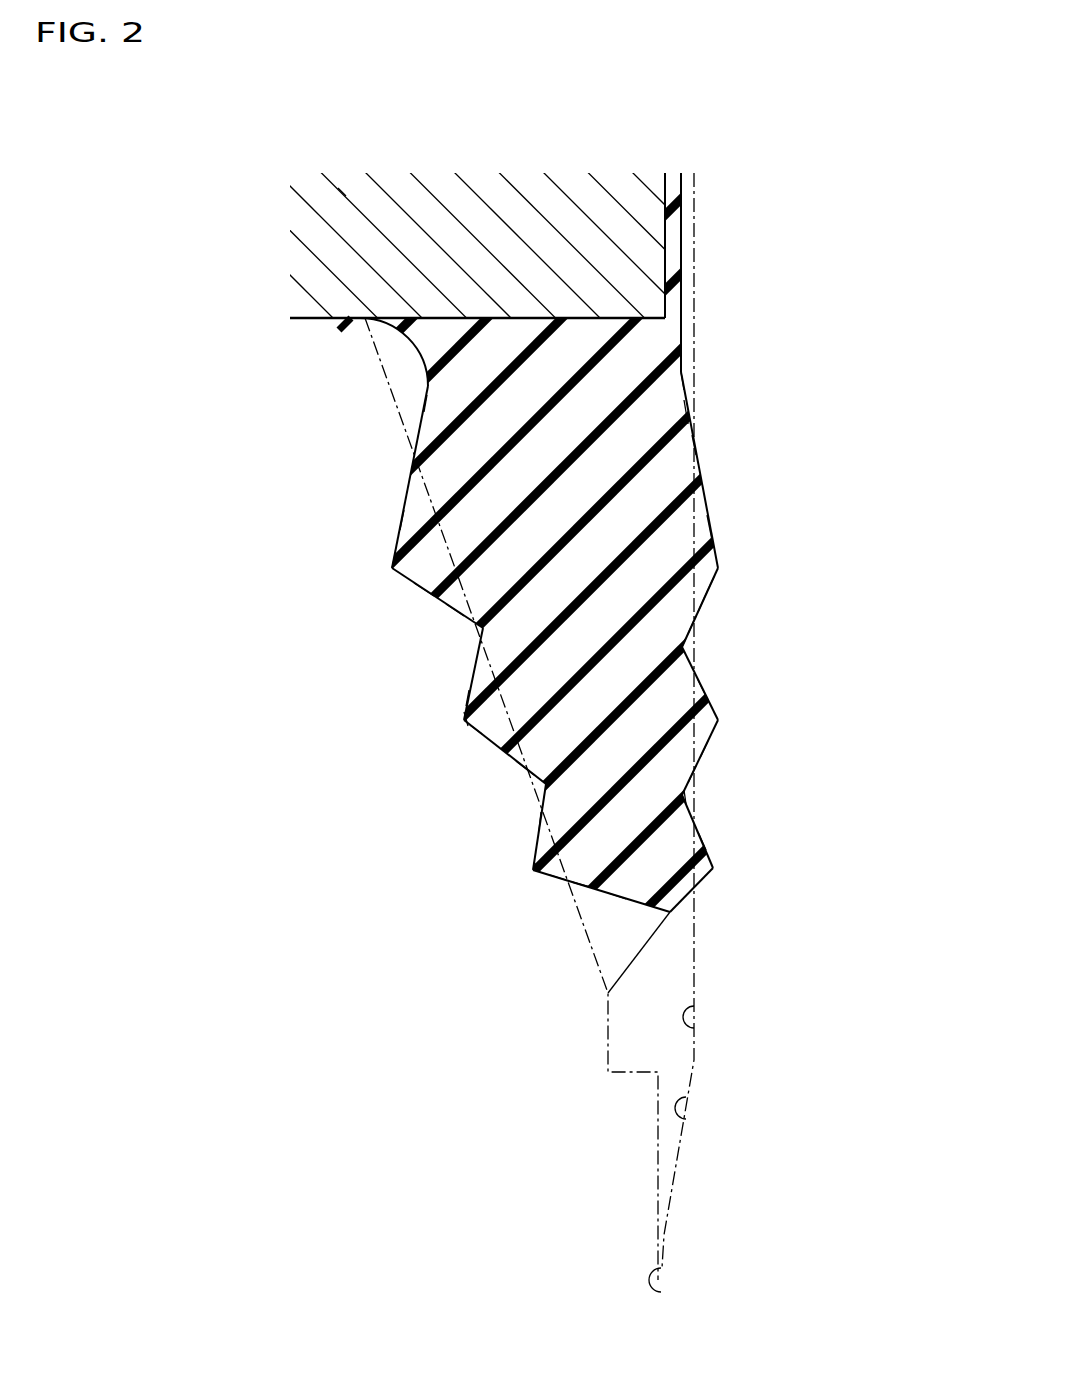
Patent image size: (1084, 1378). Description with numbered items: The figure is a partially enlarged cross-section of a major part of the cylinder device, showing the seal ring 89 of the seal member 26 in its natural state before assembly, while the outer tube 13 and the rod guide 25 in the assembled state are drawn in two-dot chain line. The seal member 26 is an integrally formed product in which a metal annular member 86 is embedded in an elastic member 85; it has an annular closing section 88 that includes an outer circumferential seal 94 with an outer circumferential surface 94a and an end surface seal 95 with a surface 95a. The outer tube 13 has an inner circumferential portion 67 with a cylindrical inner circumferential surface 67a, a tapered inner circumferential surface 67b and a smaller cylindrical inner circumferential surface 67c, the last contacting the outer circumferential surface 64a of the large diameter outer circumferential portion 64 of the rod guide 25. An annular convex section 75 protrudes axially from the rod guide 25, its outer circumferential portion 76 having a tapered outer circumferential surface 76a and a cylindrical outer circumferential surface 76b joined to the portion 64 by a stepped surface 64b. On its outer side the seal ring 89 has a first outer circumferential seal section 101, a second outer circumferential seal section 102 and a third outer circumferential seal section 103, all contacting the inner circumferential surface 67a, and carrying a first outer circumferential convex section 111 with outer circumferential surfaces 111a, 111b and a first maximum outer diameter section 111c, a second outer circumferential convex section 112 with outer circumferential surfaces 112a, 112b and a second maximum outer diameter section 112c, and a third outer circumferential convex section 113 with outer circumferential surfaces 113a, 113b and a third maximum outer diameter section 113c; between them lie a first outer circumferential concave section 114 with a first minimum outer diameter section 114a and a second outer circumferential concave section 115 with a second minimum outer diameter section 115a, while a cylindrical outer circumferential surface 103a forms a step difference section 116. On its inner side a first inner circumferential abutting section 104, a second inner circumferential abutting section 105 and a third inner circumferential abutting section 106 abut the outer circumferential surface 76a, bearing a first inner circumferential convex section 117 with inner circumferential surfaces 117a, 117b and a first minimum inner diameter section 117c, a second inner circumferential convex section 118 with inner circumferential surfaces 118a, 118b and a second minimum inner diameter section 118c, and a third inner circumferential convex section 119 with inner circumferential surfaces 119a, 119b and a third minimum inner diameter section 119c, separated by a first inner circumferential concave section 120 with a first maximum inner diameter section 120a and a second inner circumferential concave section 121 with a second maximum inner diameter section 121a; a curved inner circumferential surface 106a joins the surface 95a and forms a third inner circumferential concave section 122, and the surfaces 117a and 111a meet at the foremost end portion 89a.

The outer tube 13 is at (665, 200).
The closing section 88 is at (290, 240).
The seal member 26 is at (270, 170).
The annular member 86 is at (342, 192).
The elastic member 85 is at (673, 185).
The outer circumferential seal 94 is at (690, 200).
The outer circumferential surface 94a is at (683, 225).
The outer circumferential portion 76 is at (398, 320).
The outer circumferential surface 76a is at (430, 386).
The inner circumferential portion 67 is at (693, 242).
The end surface seal 95 is at (360, 320).
The surface 95a is at (423, 368).
The third inner circumferential abutting section 106 is at (396, 546).
The curved inner circumferential surface 106a is at (428, 403).
The third inner circumferential concave section 122 is at (398, 440).
The third inner circumferential convex section 119 is at (408, 578).
The inner circumferential surface 119a is at (424, 590).
The inner circumferential surface 119b is at (402, 520).
The third minimum inner diameter section 119c is at (392, 568).
The second inner circumferential concave section 121 is at (476, 660).
The second maximum inner diameter section 121a is at (454, 610).
The second inner circumferential convex section 118 is at (495, 745).
The inner circumferential surface 118a is at (525, 768).
The inner circumferential surface 118b is at (464, 698).
The second minimum inner diameter section 118c is at (476, 730).
The second inner circumferential abutting section 105 is at (464, 722).
The first inner circumferential concave section 120 is at (534, 856).
The first maximum inner diameter section 120a is at (538, 820).
The first inner circumferential convex section 117 is at (600, 891).
The inner circumferential surface 117a is at (616, 897).
The inner circumferential surface 117b is at (533, 870).
The first minimum inner diameter section 117c is at (580, 884).
The first inner circumferential abutting section 104 is at (556, 877).
The annular convex section 75 is at (610, 975).
The seal ring 89 is at (585, 960).
The foremost end portion 89a is at (606, 1010).
The third outer circumferential convex section 113 is at (700, 482).
The outer circumferential surface 113a is at (709, 527).
The outer circumferential surface 113b is at (687, 383).
The third maximum outer diameter section 113c is at (692, 445).
The third outer circumferential seal section 103 is at (685, 412).
The outer circumferential surface 103a is at (681, 300).
The step difference section 116 is at (681, 338).
The second outer circumferential concave section 115 is at (716, 566).
The second minimum outer diameter section 115a is at (710, 584).
The second outer circumferential convex section 112 is at (695, 664).
The outer circumferential surface 112a is at (705, 688).
The outer circumferential surface 112b is at (703, 600).
The second maximum outer diameter section 112c is at (693, 644).
The second outer circumferential seal section 102 is at (695, 622).
The first outer circumferential concave section 114 is at (717, 720).
The first minimum outer diameter section 114a is at (707, 750).
The first outer circumferential convex section 111 is at (712, 868).
The outer circumferential surface 111a is at (700, 908).
The outer circumferential surface 111b is at (694, 773).
The first maximum outer diameter section 111c is at (703, 838).
The first outer circumferential seal section 101 is at (684, 795).
The outer circumferential surface 76b is at (696, 1000).
The inner circumferential surface 67a is at (697, 1018).
The inner circumferential surface 67b is at (695, 1108).
The inner circumferential surface 67c is at (668, 1292).
The stepped surface 64b is at (632, 1070).
The large diameter outer circumferential portion 64 is at (660, 1140).
The outer circumferential surface 64a is at (660, 1175).
The rod guide 25 is at (660, 1203).